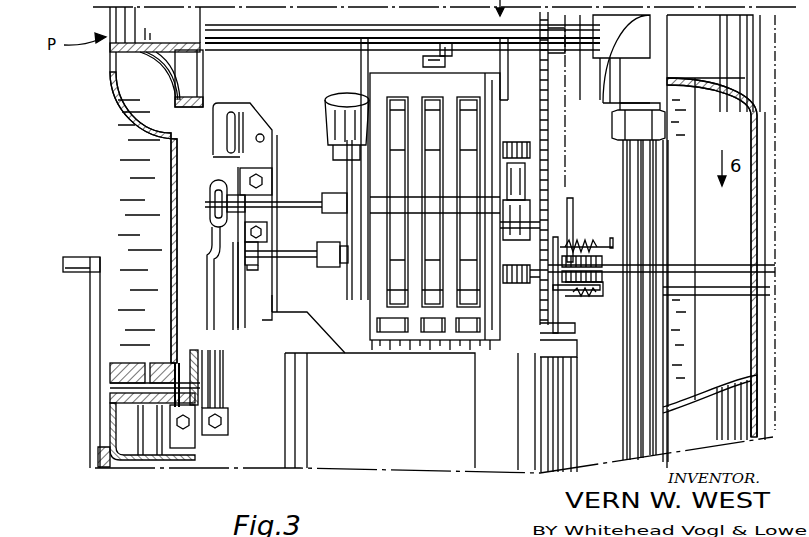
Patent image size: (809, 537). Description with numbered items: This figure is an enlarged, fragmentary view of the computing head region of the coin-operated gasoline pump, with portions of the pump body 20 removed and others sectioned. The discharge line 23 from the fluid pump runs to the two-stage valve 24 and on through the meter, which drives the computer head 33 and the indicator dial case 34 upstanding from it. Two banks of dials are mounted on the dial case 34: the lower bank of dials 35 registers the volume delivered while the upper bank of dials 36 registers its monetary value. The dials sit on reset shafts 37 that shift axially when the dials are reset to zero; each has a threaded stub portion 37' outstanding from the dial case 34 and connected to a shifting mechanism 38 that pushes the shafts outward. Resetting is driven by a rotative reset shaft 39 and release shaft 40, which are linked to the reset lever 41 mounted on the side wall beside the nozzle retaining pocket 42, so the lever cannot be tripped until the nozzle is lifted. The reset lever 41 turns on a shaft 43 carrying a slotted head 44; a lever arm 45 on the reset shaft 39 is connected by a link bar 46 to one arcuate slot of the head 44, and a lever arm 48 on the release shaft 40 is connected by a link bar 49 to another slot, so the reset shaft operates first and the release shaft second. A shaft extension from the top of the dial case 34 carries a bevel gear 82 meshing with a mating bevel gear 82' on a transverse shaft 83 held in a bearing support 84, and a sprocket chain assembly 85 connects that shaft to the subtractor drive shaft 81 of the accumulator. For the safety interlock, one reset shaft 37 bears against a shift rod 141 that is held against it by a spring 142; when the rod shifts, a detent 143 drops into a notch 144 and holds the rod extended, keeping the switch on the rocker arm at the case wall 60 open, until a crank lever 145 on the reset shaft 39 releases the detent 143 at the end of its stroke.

The pump body 20 is at (185, 80).
The discharge line 23 is at (300, 35).
The two-stage valve 24 is at (364, 3).
The computer head 33 is at (410, 411).
The indicator dial case 34 is at (330, 97).
The lower bank of dials 35 is at (390, 298).
The upper bank of dials 36 is at (395, 157).
The reset shaft 37 is at (543, 234).
The threaded stub portion 37' is at (547, 138).
The shifting mechanism 38 is at (530, 187).
The reset shaft 39 is at (300, 198).
The release shaft 40 is at (300, 253).
The reset lever 41 is at (80, 257).
The nozzle retaining pocket 42 is at (135, 133).
The shaft 43 is at (153, 362).
The slotted head 44 is at (226, 398).
The lever arm 45 is at (212, 200).
The link bar 46 is at (212, 248).
The lever arm 48 is at (258, 260).
The link bar 49 is at (232, 322).
The wall of the case 60 is at (770, 152).
The subtractor drive shaft 81 is at (718, 297).
The bevel gear 82 is at (416, 73).
The mating bevel gear 82' is at (460, 67).
The transverse shaft 83 is at (505, 60).
The bearing support 84 is at (360, 60).
The sprocket chain assembly 85 is at (551, 88).
The shift rod 141 is at (748, 270).
The spring 142 is at (584, 238).
The detent 143 is at (595, 294).
The notch 144 is at (578, 287).
The crank lever 145 is at (574, 214).